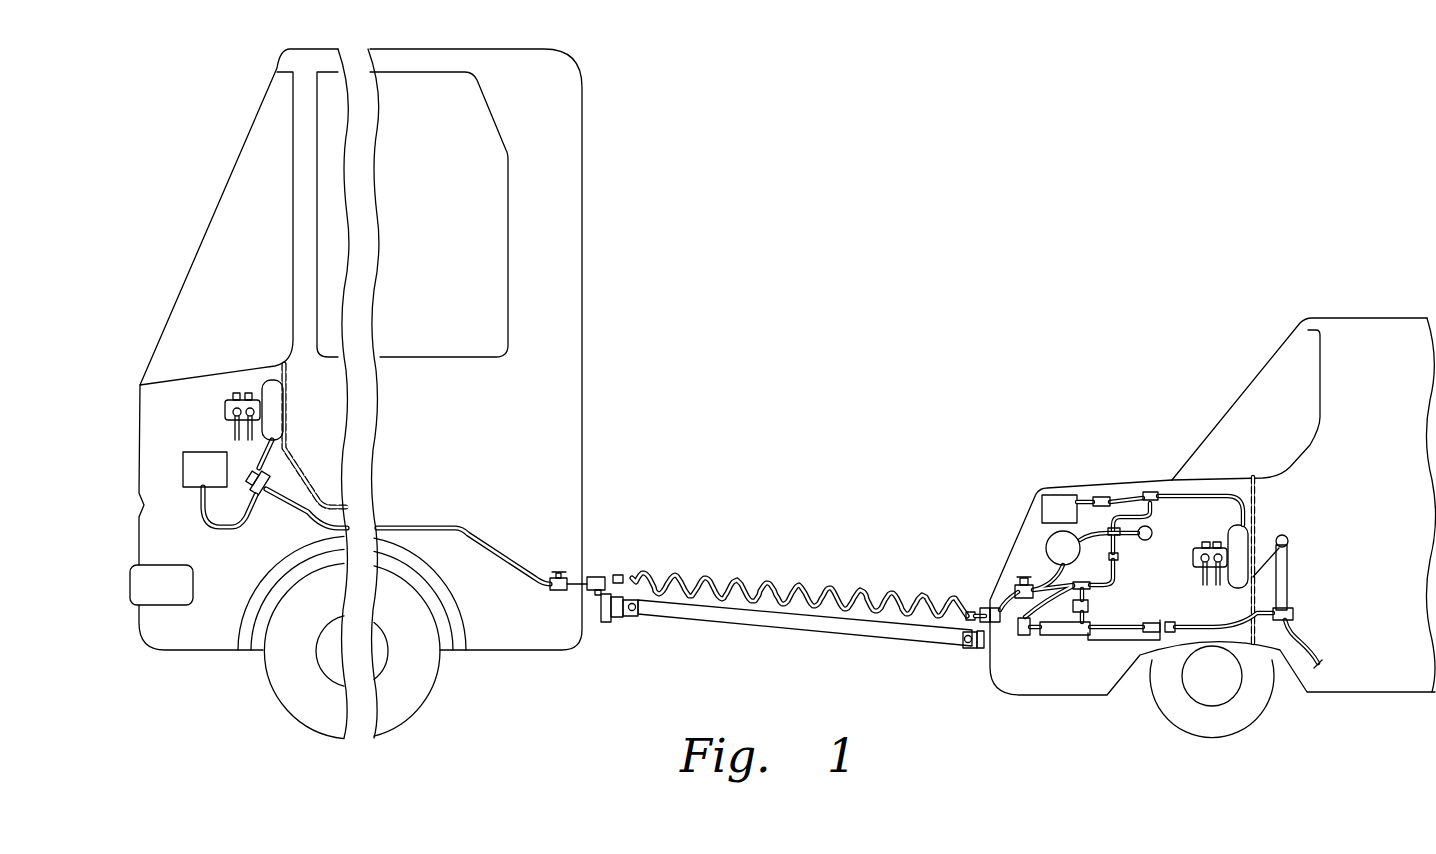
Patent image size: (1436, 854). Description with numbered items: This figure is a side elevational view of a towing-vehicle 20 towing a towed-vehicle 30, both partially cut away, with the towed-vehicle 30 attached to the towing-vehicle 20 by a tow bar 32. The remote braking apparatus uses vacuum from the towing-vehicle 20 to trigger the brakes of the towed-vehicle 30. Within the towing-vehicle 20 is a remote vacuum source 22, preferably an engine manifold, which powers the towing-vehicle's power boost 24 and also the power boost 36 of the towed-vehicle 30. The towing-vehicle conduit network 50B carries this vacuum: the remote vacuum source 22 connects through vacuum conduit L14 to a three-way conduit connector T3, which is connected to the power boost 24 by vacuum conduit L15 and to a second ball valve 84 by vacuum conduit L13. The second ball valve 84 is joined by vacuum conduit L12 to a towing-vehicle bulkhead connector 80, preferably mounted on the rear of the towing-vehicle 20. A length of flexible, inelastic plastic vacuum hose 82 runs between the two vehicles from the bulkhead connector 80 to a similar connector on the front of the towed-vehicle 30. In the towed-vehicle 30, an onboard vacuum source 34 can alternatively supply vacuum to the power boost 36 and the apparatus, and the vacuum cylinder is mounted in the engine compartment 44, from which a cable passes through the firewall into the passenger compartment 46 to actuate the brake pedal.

The towing-vehicle 20 is at (582, 180).
The remote vacuum source 22 is at (220, 482).
The power boost 24 is at (262, 380).
The vacuum conduit L12 is at (584, 577).
The vacuum conduit L13 is at (460, 523).
The vacuum conduit L14 is at (212, 530).
The vacuum conduit L15 is at (290, 464).
The three-way conduit connector T3 is at (262, 497).
The towed-vehicle 30 is at (1367, 318).
The tow bar 32 is at (803, 636).
The onboard vacuum source 34 is at (1074, 520).
The power boost 36 is at (1250, 523).
The engine compartment 44 is at (1177, 597).
The passenger compartment 46 is at (1384, 581).
The towing-vehicle conduit network 50B is at (539, 466).
The towing-vehicle bulkhead connector 80 is at (599, 578).
The vacuum hose 82 is at (807, 588).
The second ball valve 84 is at (562, 592).